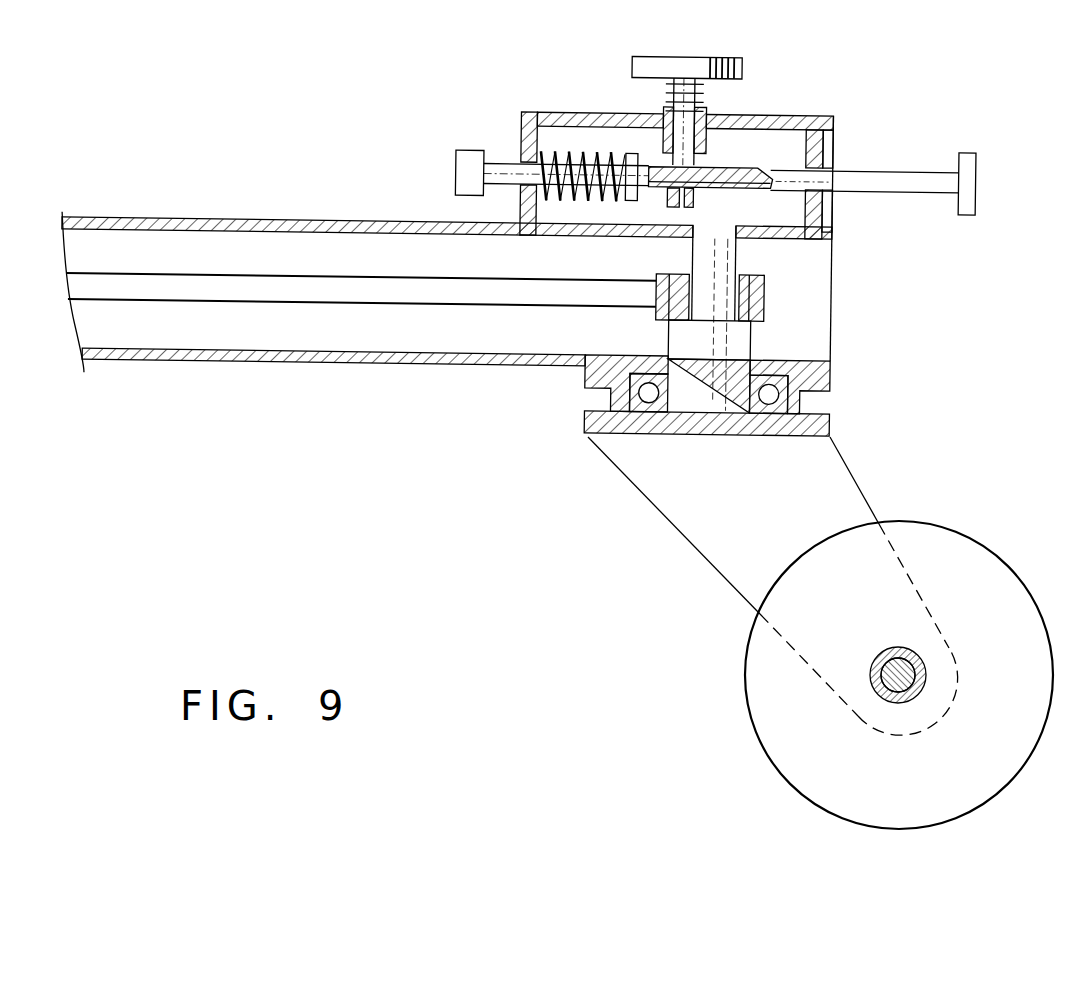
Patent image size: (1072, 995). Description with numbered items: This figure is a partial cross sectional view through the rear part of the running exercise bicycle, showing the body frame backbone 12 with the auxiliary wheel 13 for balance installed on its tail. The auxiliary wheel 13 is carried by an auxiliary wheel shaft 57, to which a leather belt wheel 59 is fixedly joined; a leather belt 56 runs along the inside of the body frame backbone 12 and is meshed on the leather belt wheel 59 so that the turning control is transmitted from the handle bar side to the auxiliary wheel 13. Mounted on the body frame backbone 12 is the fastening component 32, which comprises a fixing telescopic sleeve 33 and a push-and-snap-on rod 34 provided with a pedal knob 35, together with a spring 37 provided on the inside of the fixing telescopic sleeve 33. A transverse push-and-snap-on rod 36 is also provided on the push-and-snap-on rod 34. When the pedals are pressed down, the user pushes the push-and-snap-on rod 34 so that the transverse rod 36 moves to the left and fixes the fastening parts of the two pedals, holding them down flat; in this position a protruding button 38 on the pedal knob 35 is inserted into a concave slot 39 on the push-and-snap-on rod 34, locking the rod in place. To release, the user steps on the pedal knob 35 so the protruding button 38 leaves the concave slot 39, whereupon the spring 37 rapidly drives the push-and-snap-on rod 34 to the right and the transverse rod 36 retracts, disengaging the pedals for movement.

The body frame backbone 12 is at (274, 362).
The auxiliary wheel 13 is at (967, 562).
The fastening component 32 is at (530, 86).
The fixing telescopic sleeve 33 is at (806, 120).
The push-and-snap-on rod 34 is at (883, 180).
The pedal knob 35 is at (744, 65).
The transverse push-and-snap-on rod 36 is at (467, 158).
The spring 37 is at (572, 165).
The protruding button 38 is at (692, 204).
The concave slot 39 is at (752, 192).
The leather belt 56 is at (318, 284).
The auxiliary wheel shaft 57 is at (742, 336).
The leather belt wheel 59 is at (764, 279).